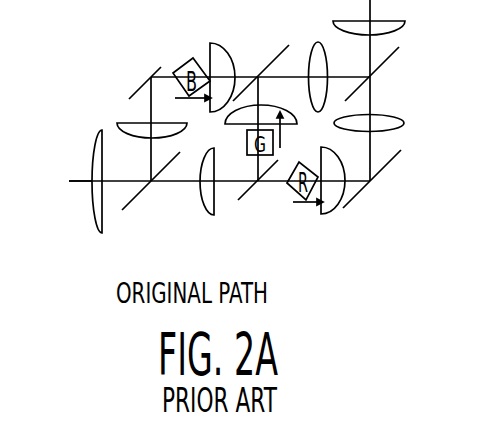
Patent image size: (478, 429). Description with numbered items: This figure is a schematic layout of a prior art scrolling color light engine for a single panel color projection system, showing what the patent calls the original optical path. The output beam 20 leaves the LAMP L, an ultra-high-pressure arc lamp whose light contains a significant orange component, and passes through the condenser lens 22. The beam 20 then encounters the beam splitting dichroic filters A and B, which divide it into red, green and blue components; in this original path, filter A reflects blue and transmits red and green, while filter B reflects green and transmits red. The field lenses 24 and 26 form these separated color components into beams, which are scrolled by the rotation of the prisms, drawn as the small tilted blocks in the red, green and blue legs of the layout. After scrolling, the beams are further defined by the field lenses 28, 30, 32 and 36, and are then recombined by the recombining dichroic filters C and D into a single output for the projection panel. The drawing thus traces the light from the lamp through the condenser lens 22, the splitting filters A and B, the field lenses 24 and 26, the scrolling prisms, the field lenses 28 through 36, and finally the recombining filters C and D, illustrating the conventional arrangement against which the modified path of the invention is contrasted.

The output beam 20 is at (80, 184).
The condenser lens 22 is at (98, 227).
The field lens 24 is at (208, 215).
The field lens 26 is at (117, 122).
The field lens 28 is at (218, 50).
The field lens 30 is at (268, 105).
The field lens 32 is at (327, 212).
The field lens 36 is at (312, 47).
The lamp L is at (42, 200).
The beam splitting dichroic filter A is at (151, 197).
The beam splitting dichroic filter B is at (258, 201).
The recombining dichroic filter C is at (261, 62).
The recombining dichroic filter D is at (380, 74).